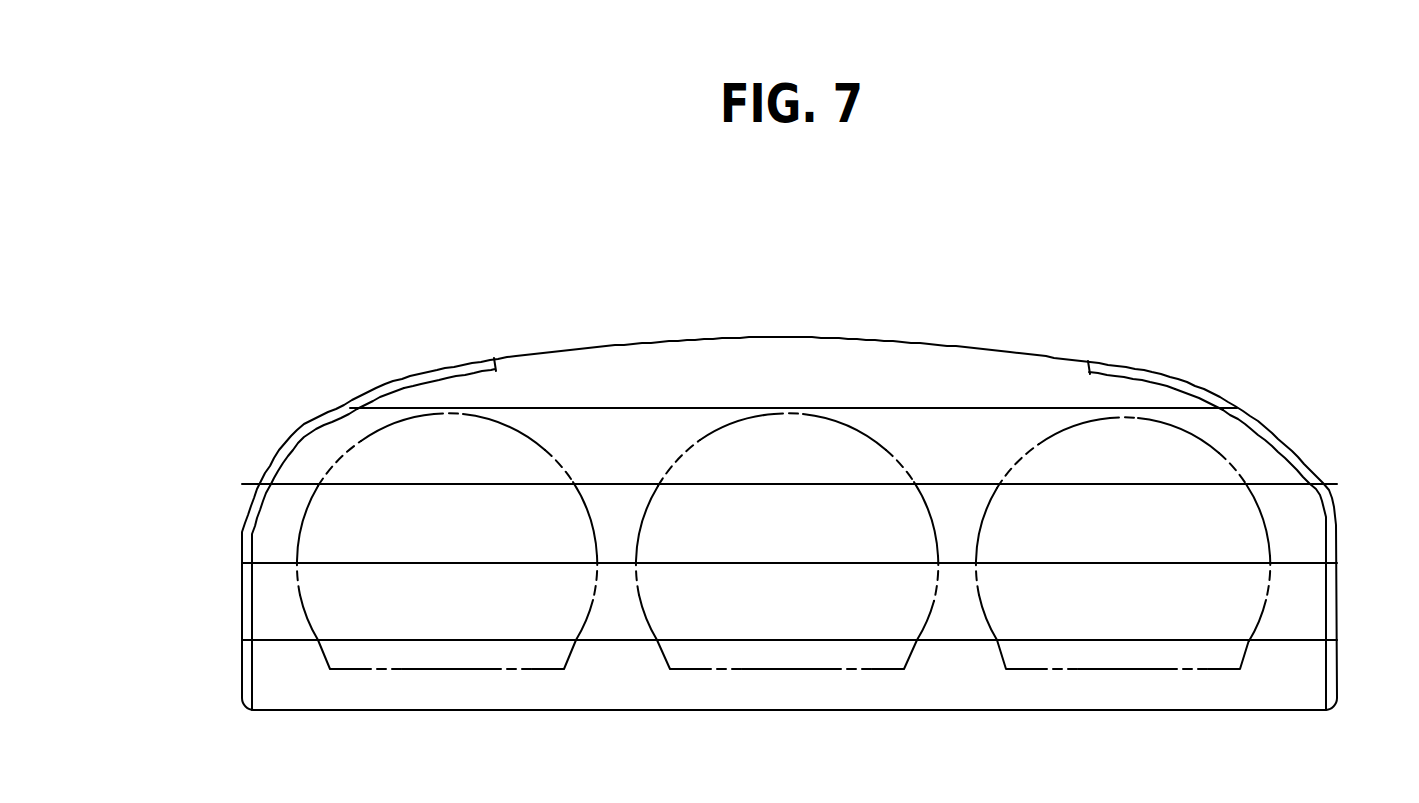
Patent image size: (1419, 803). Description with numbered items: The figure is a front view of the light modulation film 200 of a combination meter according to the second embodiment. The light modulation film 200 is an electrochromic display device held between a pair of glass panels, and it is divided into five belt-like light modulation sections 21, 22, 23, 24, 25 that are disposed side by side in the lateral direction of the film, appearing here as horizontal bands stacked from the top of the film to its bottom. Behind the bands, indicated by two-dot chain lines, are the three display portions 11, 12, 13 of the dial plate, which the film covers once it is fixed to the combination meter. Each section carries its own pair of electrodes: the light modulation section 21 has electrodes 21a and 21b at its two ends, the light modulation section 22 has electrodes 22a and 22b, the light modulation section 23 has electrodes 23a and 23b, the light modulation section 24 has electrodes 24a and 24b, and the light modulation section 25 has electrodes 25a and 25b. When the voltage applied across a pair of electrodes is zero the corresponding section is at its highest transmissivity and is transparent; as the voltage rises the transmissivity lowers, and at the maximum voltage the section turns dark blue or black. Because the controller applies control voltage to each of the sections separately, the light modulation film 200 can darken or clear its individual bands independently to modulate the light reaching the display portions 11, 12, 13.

The light modulation film 200 is at (302, 293).
The display portion 11 is at (715, 437).
The display portion 12 is at (1057, 430).
The display portion 13 is at (540, 440).
The light modulation section 21 is at (422, 377).
The electrode 21a is at (462, 370).
The electrode 21b is at (1160, 377).
The light modulation section 22 is at (285, 453).
The electrode 22a is at (323, 427).
The electrode 22b is at (1265, 430).
The light modulation section 23 is at (240, 532).
The electrode 23a is at (255, 497).
The electrode 23b is at (1330, 513).
The light modulation section 24 is at (240, 613).
The electrode 24a is at (247, 577).
The electrode 24b is at (1335, 598).
The light modulation section 25 is at (240, 690).
The electrode 25a is at (248, 663).
The electrode 25b is at (1335, 663).